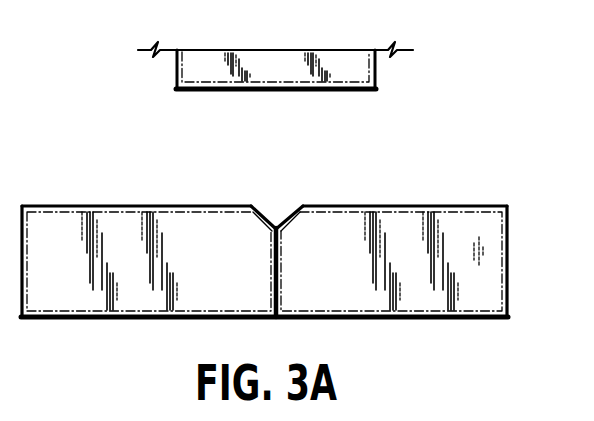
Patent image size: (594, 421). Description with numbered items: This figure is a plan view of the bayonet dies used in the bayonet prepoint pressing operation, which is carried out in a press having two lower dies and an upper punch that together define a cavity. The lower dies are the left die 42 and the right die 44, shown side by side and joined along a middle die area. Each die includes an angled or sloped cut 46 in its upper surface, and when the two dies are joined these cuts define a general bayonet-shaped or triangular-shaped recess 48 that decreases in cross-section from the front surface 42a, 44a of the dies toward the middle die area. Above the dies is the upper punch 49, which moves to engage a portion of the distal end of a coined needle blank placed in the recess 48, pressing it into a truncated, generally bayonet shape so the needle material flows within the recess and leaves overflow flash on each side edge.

The left die 42 is at (151, 218).
The front surface of left die 42a is at (231, 268).
The right die 44 is at (412, 221).
The front surface of right die 44a is at (339, 271).
The angled cut 46 is at (292, 212).
The triangular-shaped recess 48 is at (267, 208).
The upper punch 49 is at (350, 90).